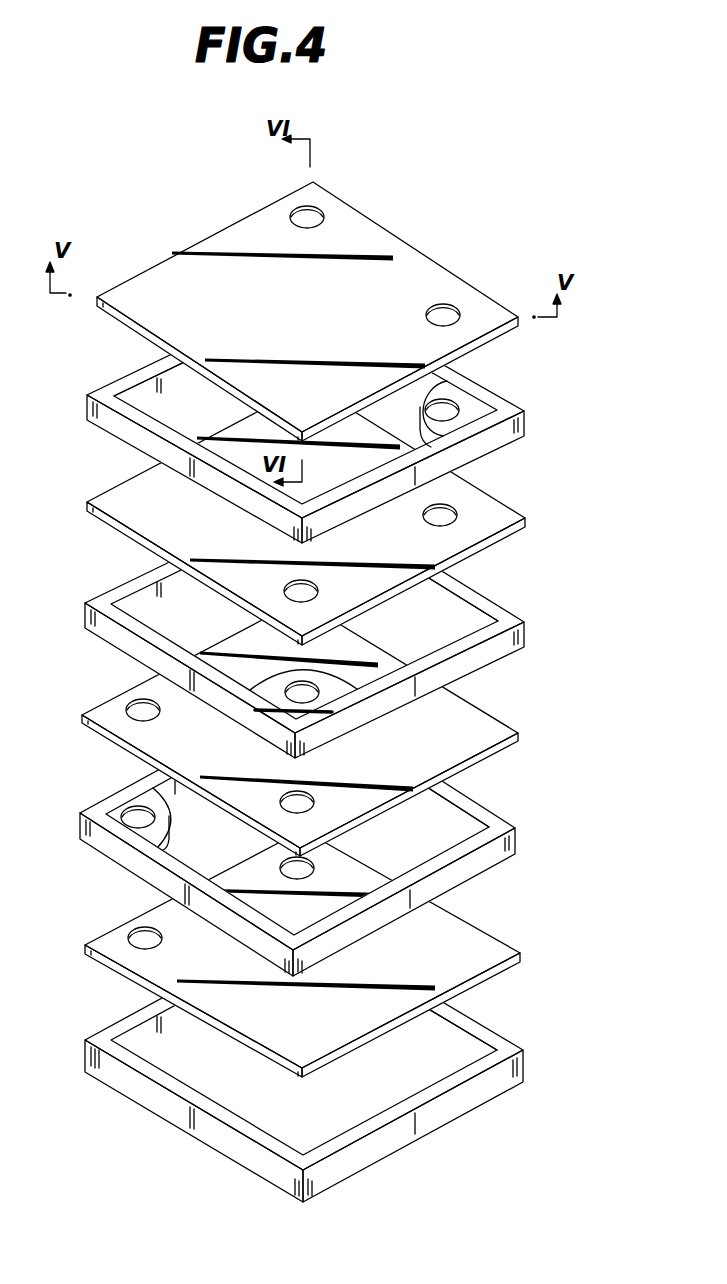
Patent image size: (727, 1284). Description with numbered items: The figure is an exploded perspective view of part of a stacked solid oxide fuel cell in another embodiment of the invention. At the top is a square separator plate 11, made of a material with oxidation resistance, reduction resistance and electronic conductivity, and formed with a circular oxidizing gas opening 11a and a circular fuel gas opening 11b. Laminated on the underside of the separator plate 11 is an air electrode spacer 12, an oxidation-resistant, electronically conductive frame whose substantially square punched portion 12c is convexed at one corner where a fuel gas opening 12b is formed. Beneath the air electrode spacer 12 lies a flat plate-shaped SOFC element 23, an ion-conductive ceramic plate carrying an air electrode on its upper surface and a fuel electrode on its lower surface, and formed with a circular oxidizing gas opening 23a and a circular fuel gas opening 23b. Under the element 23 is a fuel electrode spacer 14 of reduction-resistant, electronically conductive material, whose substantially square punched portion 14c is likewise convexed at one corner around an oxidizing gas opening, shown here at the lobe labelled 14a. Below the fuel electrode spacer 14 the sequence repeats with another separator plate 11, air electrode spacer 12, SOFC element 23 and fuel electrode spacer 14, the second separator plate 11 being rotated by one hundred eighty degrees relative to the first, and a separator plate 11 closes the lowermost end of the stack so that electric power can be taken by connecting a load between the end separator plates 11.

The separator plate 11 is at (305, 519).
The oxidizing gas opening 11a is at (325, 213).
The fuel gas opening 11b is at (130, 706).
The air electrode spacer 12 is at (314, 632).
The fuel gas opening 12b is at (456, 403).
The punched portion 12c is at (140, 385).
The flat plate-shaped SOFC element 23 is at (325, 730).
The oxidizing gas opening 23a is at (322, 597).
The fuel gas opening 23b is at (455, 510).
The fuel electrode spacer 14 is at (333, 847).
The hole of spacer frame 14a is at (320, 698).
The punched portion 14c is at (478, 612).